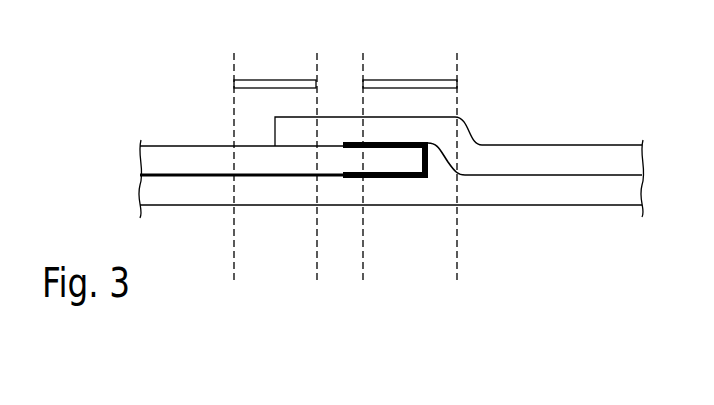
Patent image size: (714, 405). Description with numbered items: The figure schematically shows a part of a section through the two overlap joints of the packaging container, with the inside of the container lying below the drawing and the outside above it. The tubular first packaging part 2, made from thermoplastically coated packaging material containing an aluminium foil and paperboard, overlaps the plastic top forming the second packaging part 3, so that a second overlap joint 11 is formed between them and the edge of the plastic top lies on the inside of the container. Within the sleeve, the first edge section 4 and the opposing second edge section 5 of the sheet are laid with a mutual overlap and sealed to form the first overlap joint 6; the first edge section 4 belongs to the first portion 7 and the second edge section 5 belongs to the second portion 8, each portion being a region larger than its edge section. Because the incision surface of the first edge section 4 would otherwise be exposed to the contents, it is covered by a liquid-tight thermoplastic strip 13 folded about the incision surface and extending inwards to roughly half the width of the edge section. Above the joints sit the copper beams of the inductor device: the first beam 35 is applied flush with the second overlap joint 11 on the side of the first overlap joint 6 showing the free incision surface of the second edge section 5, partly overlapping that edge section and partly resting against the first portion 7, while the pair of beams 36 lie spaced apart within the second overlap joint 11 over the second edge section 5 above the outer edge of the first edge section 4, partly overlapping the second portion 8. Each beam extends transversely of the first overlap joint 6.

The first packaging part 2 is at (568, 145).
The second packaging part 3 is at (588, 203).
The first edge section 4 is at (342, 157).
The second edge section 5 is at (338, 130).
The first overlap joint 6 is at (297, 144).
The first portion 7 is at (172, 162).
The second portion 8 is at (518, 162).
The second overlap joint 11 is at (203, 177).
The strip 13 is at (407, 141).
The first beam 35 is at (269, 80).
The pair of beams 36 is at (408, 80).